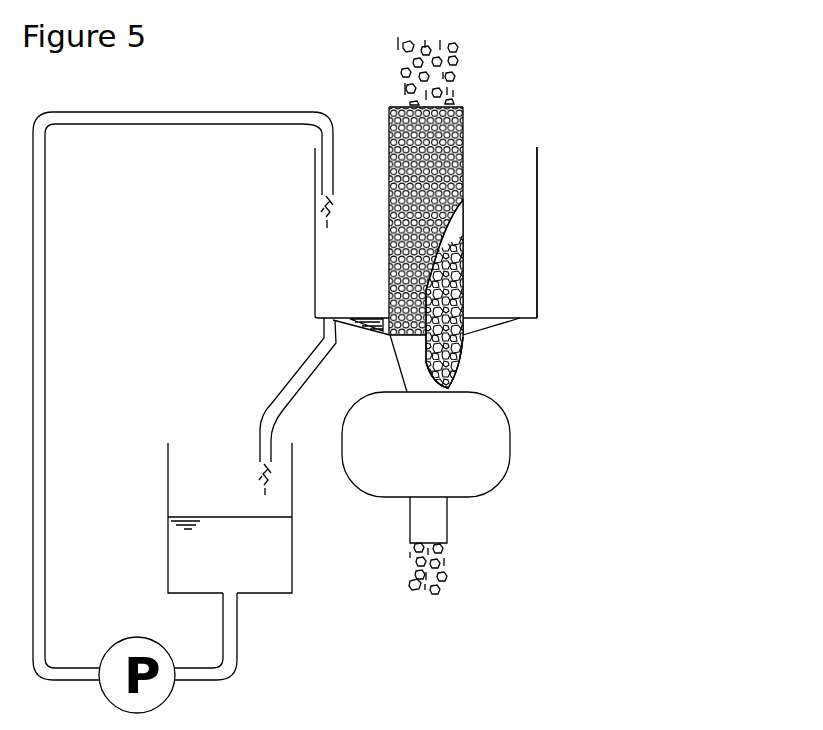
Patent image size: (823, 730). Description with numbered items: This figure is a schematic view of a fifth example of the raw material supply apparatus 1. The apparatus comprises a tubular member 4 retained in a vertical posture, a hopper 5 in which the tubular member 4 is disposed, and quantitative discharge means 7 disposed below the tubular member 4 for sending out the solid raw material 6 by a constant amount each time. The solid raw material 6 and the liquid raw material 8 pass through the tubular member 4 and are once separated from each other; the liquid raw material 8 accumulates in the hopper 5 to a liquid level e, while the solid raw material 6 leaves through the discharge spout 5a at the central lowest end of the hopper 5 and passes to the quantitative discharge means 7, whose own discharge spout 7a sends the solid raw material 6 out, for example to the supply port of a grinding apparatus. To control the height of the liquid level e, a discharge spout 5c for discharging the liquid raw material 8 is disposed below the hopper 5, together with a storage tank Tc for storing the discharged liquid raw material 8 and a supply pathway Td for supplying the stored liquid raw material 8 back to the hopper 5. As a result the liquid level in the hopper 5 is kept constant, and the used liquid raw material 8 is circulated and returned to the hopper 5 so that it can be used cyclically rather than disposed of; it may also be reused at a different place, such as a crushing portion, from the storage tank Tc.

The raw material supply apparatus 1 is at (540, 165).
The tubular member 4 is at (465, 160).
The hopper 5 is at (537, 273).
The discharge spout 5a is at (460, 357).
The discharge spout 5c is at (322, 332).
The solid raw material 6 is at (460, 240).
The quantitative discharge means 7 is at (510, 443).
The discharge spout 7a is at (447, 517).
The liquid raw material 8 is at (383, 327).
The liquid level e is at (500, 316).
The supply pathway Td is at (173, 111).
The storage tank Tc is at (265, 593).